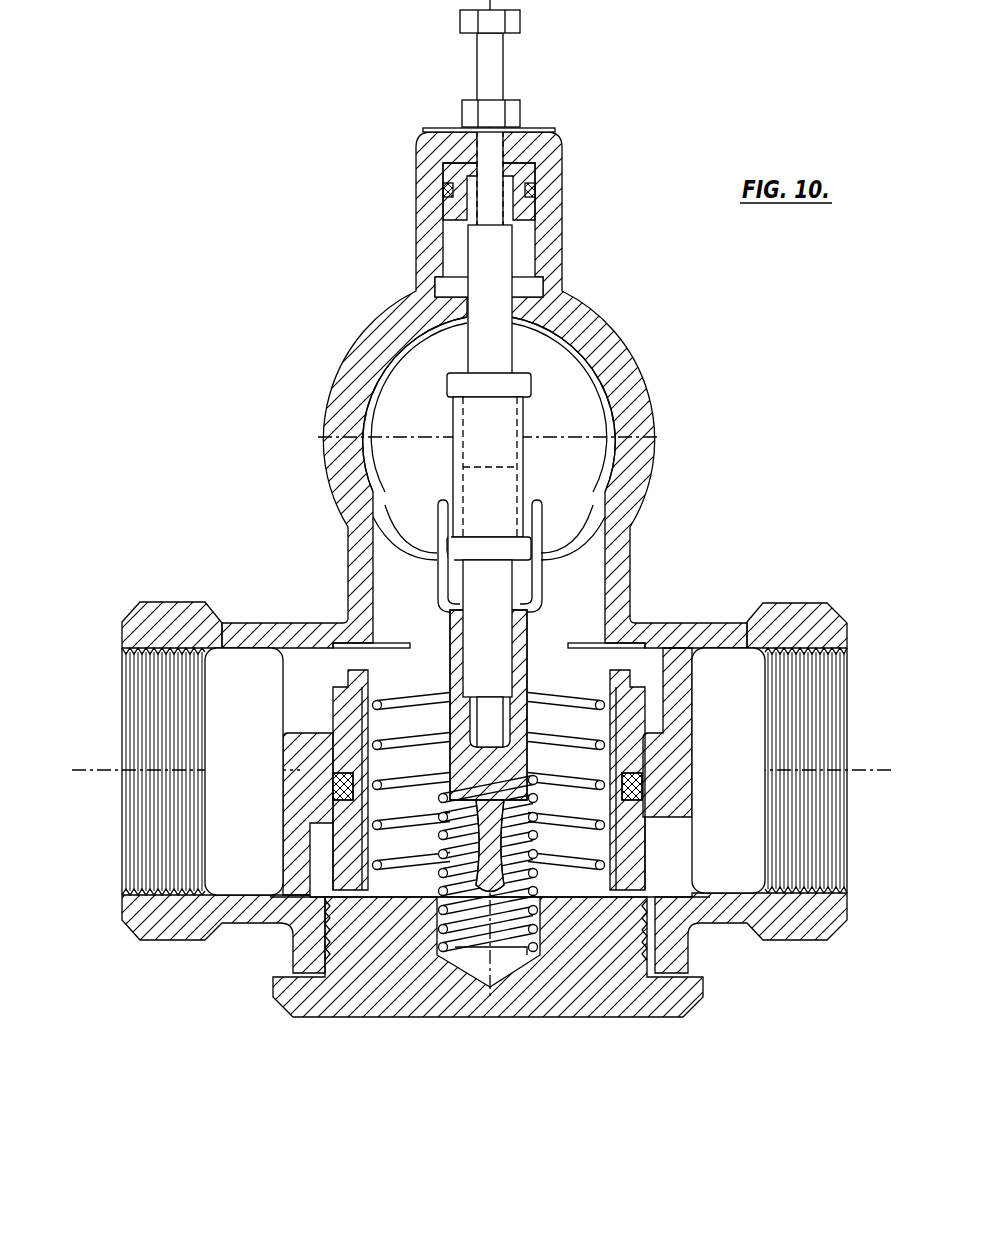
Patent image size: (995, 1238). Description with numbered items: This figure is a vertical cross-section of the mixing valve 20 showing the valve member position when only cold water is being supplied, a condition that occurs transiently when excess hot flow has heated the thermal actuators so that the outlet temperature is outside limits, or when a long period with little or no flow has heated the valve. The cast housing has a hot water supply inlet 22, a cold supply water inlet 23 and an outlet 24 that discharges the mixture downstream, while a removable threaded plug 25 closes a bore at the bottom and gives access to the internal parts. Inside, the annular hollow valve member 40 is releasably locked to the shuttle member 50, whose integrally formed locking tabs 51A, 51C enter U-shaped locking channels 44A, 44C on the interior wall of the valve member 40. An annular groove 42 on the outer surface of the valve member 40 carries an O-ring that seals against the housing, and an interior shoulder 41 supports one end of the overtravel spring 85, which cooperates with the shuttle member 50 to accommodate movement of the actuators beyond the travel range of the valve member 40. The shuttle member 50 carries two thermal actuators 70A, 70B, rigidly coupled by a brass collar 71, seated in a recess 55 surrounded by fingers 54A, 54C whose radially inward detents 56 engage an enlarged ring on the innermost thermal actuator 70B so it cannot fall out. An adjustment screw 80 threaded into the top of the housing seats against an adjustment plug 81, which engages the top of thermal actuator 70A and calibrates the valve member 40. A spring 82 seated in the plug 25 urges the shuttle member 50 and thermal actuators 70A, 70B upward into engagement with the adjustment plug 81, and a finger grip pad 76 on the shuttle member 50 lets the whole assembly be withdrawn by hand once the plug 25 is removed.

The mixing valve 20 is at (280, 200).
The hot water supply inlet 22 is at (135, 722).
The cold supply water inlet 23 is at (823, 712).
The outlet 24 is at (345, 420).
The removable threaded plug 25 is at (613, 990).
The valve member 40 is at (357, 750).
The interior shoulder 41 is at (598, 863).
The annular groove 42 is at (350, 790).
The locking channel 44A is at (630, 690).
The locking channel 44C is at (345, 728).
The shuttle member 50 is at (427, 657).
The locking tab 51A is at (562, 672).
The locking tab 51C is at (350, 672).
The finger 54A is at (540, 573).
The finger 54C is at (445, 560).
The recess 55 is at (405, 683).
The detent 56 is at (455, 515).
The thermal actuator 70A is at (497, 258).
The thermal actuator 70B is at (500, 575).
The brass collar 71 is at (473, 422).
The finger grip pad 76 is at (470, 895).
The adjustment screw 80 is at (500, 23).
The adjustment plug 81 is at (533, 175).
The spring 82 is at (508, 935).
The overtravel spring 85 is at (603, 825).